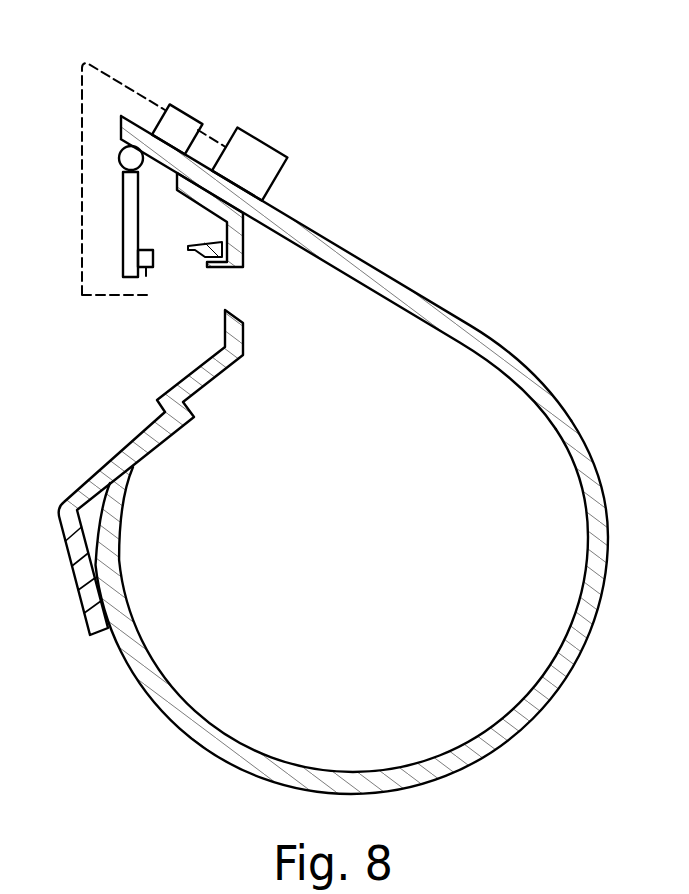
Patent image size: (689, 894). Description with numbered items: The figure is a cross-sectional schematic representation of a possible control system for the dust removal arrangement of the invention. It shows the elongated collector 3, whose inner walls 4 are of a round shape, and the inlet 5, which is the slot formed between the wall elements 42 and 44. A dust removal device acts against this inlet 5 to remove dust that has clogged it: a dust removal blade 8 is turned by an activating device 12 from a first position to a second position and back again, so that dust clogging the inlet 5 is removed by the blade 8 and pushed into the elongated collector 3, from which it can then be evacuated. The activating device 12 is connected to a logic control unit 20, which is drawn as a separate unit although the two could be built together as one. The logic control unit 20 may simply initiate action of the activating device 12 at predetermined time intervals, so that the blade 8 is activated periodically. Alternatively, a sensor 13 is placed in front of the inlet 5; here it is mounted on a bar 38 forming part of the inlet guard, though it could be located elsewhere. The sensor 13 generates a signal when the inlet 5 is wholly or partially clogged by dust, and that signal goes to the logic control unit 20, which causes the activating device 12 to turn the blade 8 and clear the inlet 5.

The elongated collector 3 is at (482, 331).
The inner walls 4 is at (586, 580).
The inlet 5 is at (236, 288).
The dust removal blade 8 is at (200, 256).
The activating device 12 is at (258, 136).
The sensor 13 is at (153, 250).
The logic control unit 20 is at (175, 103).
The bar 38 is at (123, 211).
The wall element 42 is at (244, 252).
The wall element 44 is at (242, 357).